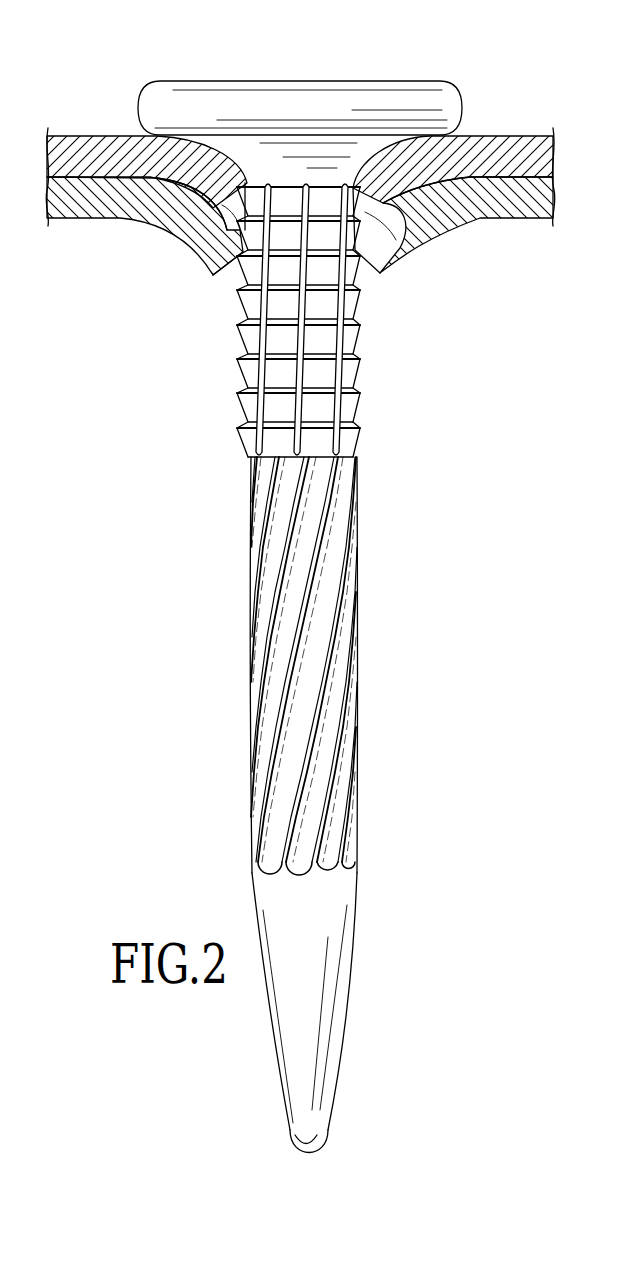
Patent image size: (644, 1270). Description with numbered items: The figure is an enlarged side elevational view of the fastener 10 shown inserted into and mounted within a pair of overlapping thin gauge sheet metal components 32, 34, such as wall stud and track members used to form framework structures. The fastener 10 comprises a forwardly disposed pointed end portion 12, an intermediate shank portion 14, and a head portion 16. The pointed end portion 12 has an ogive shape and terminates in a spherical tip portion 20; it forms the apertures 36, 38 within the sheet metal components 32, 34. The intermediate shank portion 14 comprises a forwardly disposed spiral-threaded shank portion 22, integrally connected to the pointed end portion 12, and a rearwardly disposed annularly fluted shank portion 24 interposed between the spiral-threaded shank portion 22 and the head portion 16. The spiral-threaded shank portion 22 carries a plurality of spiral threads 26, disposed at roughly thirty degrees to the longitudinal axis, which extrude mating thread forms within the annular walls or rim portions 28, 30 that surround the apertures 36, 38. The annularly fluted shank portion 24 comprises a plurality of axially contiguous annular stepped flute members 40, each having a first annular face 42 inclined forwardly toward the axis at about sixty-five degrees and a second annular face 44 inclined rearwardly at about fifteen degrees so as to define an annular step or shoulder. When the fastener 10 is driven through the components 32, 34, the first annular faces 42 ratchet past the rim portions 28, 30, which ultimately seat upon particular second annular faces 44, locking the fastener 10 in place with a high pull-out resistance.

The fastener 10 is at (376, 621).
The forwardly disposed pointed end portion 12 is at (324, 1050).
The intermediate shank portion 14 is at (306, 666).
The head portion 16 is at (340, 112).
The tip portion 20 is at (306, 1153).
The spiral-threaded shank portion 22 is at (310, 700).
The annularly fluted shank portion 24 is at (295, 273).
The spiral threads 26 is at (323, 664).
The annular wall or rim portion 28 is at (243, 220).
The annular wall or rim portion 30 is at (230, 278).
The thin gauge sheet metal component 32 is at (523, 143).
The thin gauge sheet metal component 34 is at (503, 203).
The aperture 36 is at (405, 264).
The aperture 38 is at (367, 278).
The annular stepped flute member 40 is at (318, 310).
The first annular face 42 is at (358, 380).
The second annular face 44 is at (238, 323).